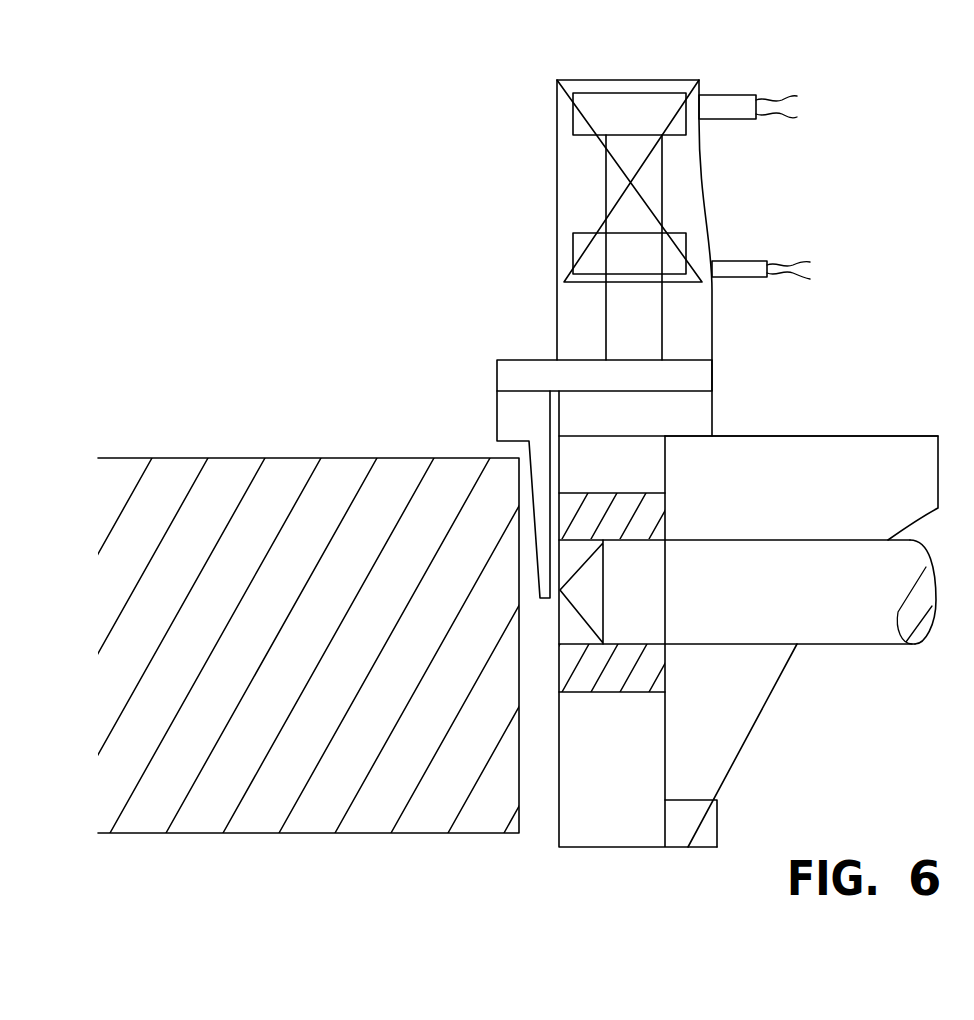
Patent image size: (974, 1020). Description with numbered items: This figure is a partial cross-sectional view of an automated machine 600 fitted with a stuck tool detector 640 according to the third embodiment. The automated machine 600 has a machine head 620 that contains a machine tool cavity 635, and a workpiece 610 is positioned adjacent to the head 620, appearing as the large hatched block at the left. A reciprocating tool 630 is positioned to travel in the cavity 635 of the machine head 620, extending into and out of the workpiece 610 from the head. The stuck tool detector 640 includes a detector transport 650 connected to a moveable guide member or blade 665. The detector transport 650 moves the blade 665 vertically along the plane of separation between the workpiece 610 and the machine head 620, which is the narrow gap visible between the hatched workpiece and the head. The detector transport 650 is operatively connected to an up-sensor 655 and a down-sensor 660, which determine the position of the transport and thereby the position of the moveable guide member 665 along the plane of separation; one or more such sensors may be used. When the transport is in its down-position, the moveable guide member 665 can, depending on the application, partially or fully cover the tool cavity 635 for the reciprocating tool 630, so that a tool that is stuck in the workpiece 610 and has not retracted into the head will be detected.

The automated machine 600 is at (927, 321).
The workpiece 610 is at (268, 484).
The machine head 620 is at (808, 467).
The reciprocating tool 630 is at (818, 627).
The machine tool cavity 635 is at (573, 628).
The stuck tool detector 640 is at (556, 175).
The detector transport 650 is at (613, 103).
The up-sensor 655 is at (738, 112).
The down-sensor 660 is at (748, 268).
The moveable guide member blade 665 is at (494, 422).